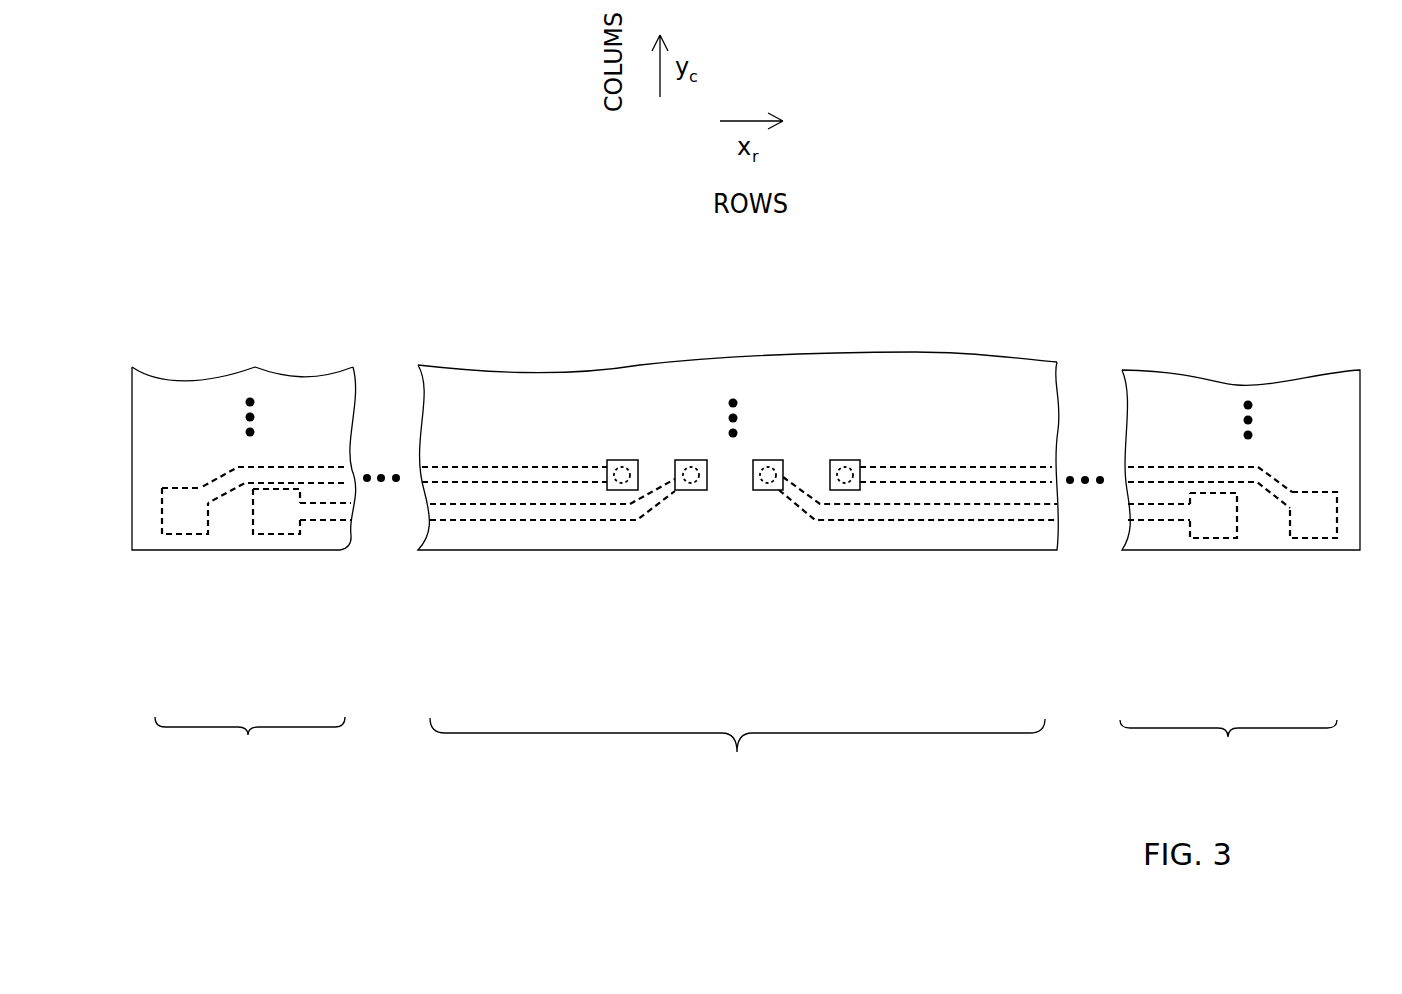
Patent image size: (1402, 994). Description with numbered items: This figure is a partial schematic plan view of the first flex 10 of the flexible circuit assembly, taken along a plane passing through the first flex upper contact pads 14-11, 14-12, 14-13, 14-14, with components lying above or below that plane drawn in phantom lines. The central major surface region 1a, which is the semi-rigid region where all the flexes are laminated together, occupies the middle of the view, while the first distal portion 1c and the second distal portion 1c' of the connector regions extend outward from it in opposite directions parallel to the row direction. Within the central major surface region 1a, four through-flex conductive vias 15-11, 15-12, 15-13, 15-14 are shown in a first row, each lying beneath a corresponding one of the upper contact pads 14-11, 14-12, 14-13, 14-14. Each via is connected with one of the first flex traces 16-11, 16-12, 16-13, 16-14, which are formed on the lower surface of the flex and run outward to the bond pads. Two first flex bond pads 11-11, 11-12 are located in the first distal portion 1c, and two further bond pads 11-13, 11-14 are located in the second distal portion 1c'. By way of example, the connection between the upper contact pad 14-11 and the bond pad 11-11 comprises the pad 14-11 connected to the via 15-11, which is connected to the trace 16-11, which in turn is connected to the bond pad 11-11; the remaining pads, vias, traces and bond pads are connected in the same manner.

The first flex 10 is at (1224, 83).
The central major surface region 1a is at (737, 760).
The first distal portion 1c is at (250, 757).
The second distal portion 1c' is at (1228, 755).
The first flex bond pad 11-11 is at (183, 534).
The first flex bond pad 11-12 is at (268, 534).
The first flex bond pad 11-13 is at (1210, 538).
The first flex bond pad 11-14 is at (1315, 538).
The first flex upper contact pad 14-11 is at (623, 490).
The first flex upper contact pad 14-12 is at (697, 490).
The first flex upper contact pad 14-13 is at (773, 490).
The first flex upper contact pad 14-14 is at (860, 490).
The first flex via 15-11 is at (621, 468).
The first flex via 15-12 is at (692, 468).
The first flex via 15-13 is at (768, 468).
The first flex via 15-14 is at (845, 468).
The first flex trace 16-11 is at (305, 466).
The first flex trace 16-12 is at (333, 520).
The first flex trace 16-13 is at (1003, 520).
The first flex trace 16-14 is at (980, 467).